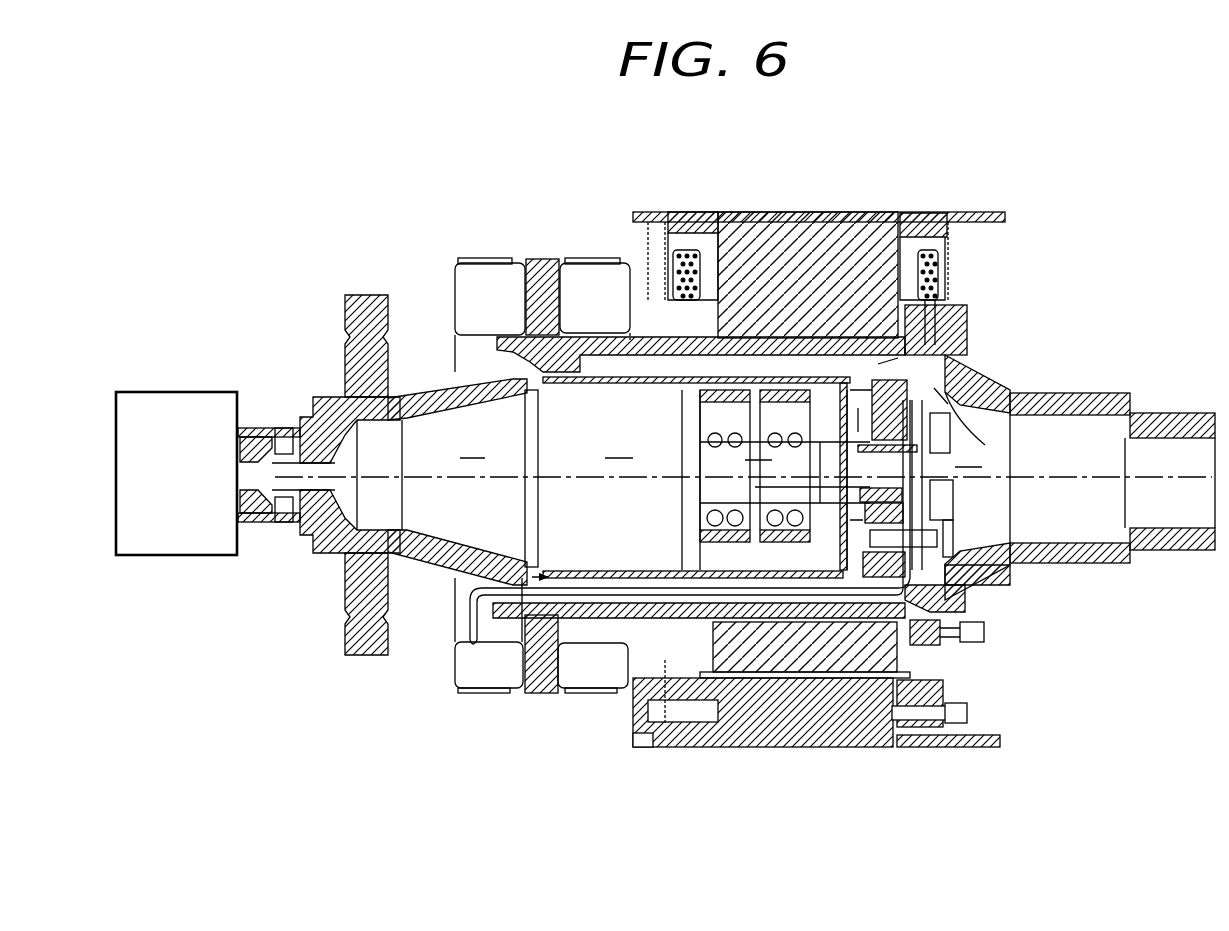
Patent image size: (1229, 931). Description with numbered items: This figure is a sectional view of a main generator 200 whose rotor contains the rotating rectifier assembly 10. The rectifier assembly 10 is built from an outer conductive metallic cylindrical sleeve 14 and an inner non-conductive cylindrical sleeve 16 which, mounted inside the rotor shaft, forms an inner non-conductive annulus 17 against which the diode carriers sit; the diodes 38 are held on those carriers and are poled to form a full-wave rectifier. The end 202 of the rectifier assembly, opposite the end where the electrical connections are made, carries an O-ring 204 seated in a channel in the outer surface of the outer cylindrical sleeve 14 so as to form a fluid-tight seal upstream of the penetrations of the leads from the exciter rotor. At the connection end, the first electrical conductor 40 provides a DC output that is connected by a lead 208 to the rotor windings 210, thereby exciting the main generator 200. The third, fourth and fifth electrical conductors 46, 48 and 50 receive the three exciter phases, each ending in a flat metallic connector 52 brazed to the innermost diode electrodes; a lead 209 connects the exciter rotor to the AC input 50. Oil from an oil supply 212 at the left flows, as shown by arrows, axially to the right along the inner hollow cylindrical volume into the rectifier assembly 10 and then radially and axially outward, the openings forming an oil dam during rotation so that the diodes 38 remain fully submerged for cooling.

The rectifier assembly 10 is at (649, 375).
The outer conductive metallic cylindrical sleeve 14 is at (616, 370).
The inner non-conductive cylindrical sleeve 16 is at (708, 563).
The inner non-conductive annulus 17 is at (700, 418).
The diodes 38 is at (708, 518).
The first electrical conductor 40 is at (967, 410).
The third electrical conductor 46 is at (950, 458).
The fourth electrical conductor 48 is at (950, 505).
The fifth electrical conductor 50 is at (973, 597).
The flat metallic connector 52 is at (703, 535).
The main generator 200 is at (539, 228).
The end of the rotating rectifier assembly 202 is at (467, 372).
The O-ring 204 is at (560, 372).
The lead 208 is at (968, 313).
The lead 209 is at (780, 593).
The rotor windings 210 is at (930, 296).
The oil supply 212 is at (157, 545).